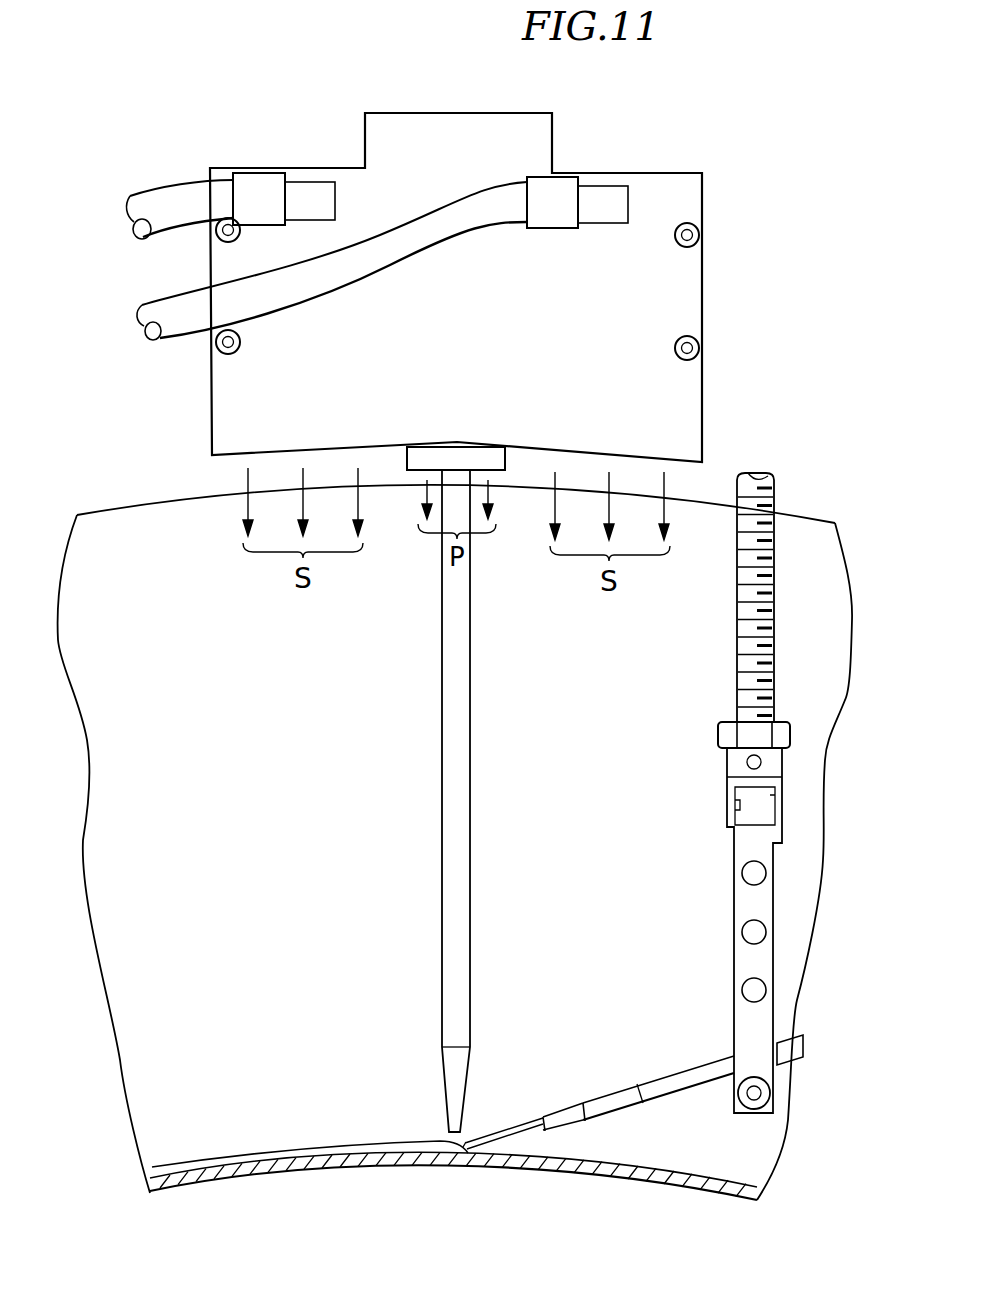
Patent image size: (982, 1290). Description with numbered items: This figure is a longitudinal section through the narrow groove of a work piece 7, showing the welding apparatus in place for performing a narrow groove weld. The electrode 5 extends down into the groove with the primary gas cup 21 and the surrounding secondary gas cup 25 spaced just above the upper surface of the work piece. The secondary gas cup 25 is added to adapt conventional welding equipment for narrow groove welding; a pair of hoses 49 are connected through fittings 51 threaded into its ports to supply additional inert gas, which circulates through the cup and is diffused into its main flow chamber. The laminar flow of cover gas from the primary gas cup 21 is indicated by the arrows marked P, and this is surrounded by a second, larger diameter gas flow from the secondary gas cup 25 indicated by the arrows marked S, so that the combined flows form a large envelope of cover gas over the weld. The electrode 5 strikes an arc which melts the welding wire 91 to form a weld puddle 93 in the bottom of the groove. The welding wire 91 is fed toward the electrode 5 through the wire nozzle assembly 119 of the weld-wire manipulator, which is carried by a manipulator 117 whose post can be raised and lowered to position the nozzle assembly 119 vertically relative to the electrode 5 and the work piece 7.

The electrode 5 is at (447, 861).
The sheet / workpiece 7 is at (126, 518).
The primary gas cup 21 is at (476, 457).
The secondary gas cup 25 is at (734, 256).
The hoses 49 is at (158, 224).
The fittings 51 is at (299, 188).
The welding wire 91 is at (503, 1128).
The weld puddle 93 is at (320, 1148).
The gauge assembly 117 is at (686, 750).
The wire nozzle assembly 119 is at (598, 1057).